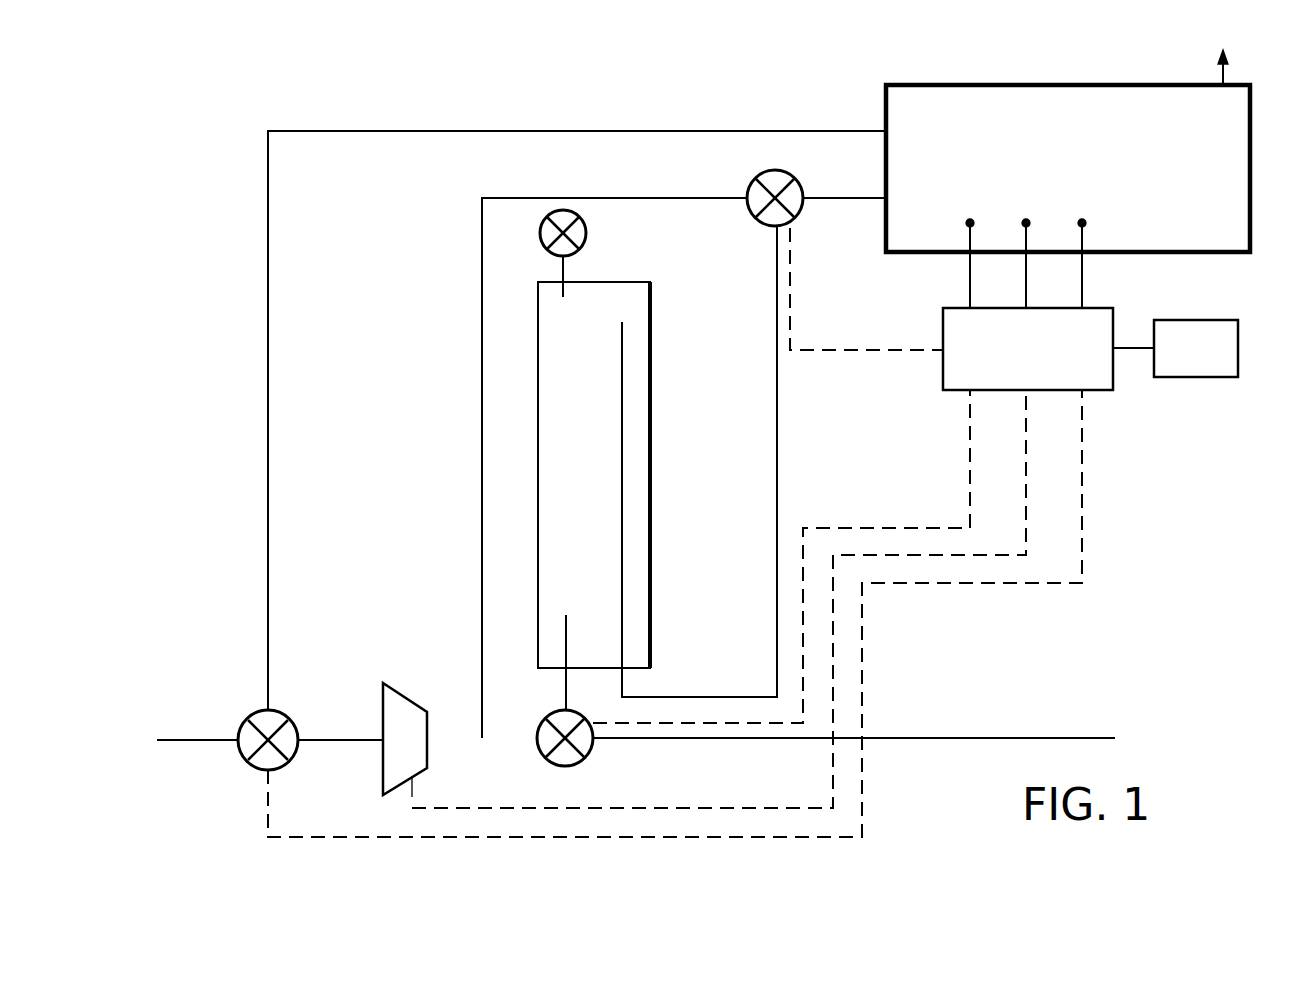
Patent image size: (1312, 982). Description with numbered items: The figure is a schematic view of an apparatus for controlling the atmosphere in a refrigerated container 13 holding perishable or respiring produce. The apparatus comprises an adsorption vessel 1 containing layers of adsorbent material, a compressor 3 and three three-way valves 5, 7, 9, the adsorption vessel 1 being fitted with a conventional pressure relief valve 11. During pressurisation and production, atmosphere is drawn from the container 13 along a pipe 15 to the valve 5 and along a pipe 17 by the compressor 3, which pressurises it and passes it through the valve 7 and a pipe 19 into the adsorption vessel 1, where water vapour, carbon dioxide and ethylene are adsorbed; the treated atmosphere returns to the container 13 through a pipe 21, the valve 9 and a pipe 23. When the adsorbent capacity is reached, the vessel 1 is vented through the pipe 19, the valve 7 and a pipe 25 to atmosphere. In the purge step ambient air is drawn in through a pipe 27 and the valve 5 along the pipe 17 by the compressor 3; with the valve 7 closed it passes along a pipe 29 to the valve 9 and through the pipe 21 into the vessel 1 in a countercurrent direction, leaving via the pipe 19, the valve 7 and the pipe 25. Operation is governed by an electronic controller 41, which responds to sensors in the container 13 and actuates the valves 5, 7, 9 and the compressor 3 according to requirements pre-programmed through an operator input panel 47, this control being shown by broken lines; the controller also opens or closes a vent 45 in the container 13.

The adsorption vessel 1 is at (652, 318).
The compressor 3 is at (410, 690).
The three-way valve 5 is at (290, 722).
The three-way valve 7 is at (588, 760).
The three-way valve 9 is at (788, 176).
The pressure relief valve 11 is at (588, 234).
The refrigerated container 13 is at (921, 85).
The pipe 15 is at (500, 131).
The pipe 17 is at (338, 742).
The pipe 19 is at (566, 691).
The pipe 21 is at (777, 419).
The pipe 23 is at (842, 198).
The pipe 25 is at (1078, 738).
The pipe 27 is at (186, 740).
The pipe 29 is at (481, 440).
The electronic controller 41 is at (711, 532).
The vent 45 is at (1226, 72).
The operator input panel 47 is at (1196, 348).